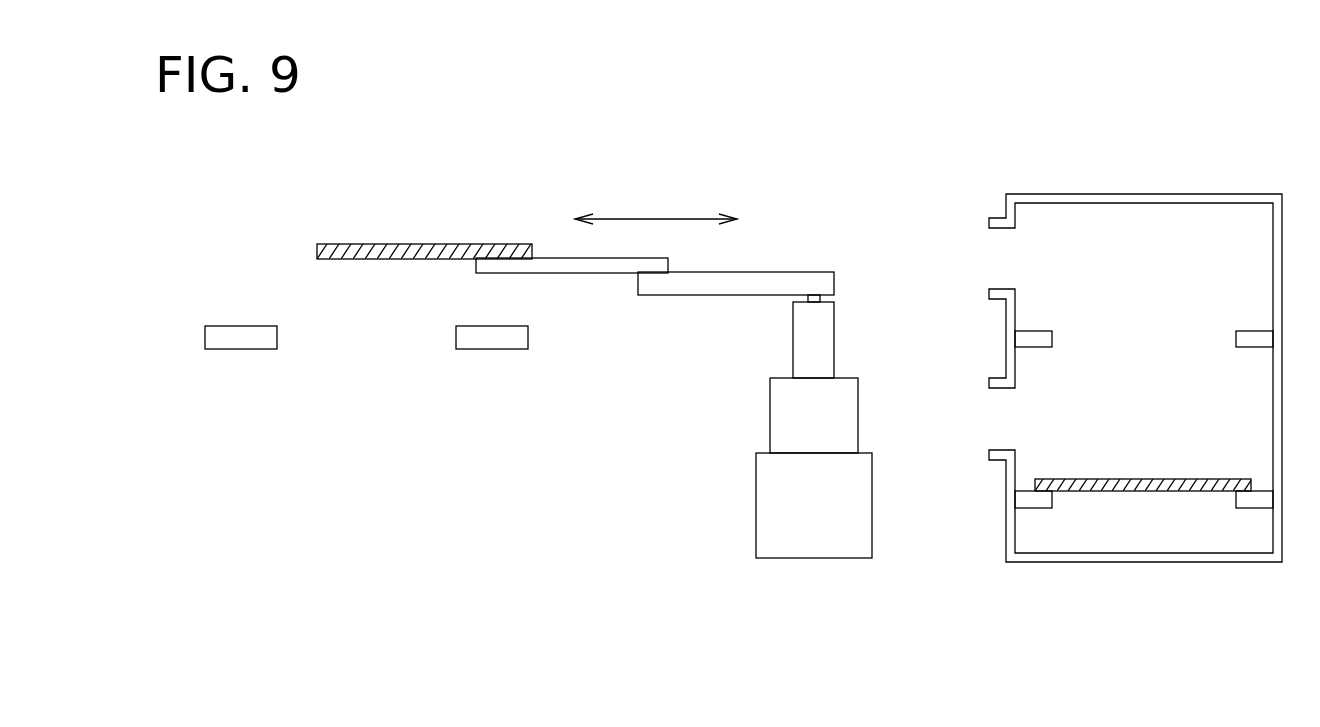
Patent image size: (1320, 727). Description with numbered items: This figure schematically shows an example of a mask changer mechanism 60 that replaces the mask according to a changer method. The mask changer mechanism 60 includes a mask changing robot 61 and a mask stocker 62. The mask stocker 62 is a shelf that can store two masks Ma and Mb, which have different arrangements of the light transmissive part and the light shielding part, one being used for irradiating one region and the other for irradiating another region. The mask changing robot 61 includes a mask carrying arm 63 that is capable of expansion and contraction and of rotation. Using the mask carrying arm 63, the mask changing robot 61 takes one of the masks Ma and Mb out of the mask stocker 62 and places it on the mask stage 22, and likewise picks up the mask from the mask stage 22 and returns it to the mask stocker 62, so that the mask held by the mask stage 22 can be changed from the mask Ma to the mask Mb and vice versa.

The mask stage 22 is at (242, 349).
The mask changer mechanism 60 is at (594, 412).
The mask changing robot 61 is at (756, 508).
The mask stocker 62 is at (1068, 193).
The mask carrying arm 63 is at (603, 272).
The mask Ma is at (381, 244).
The mask Mb is at (1176, 479).